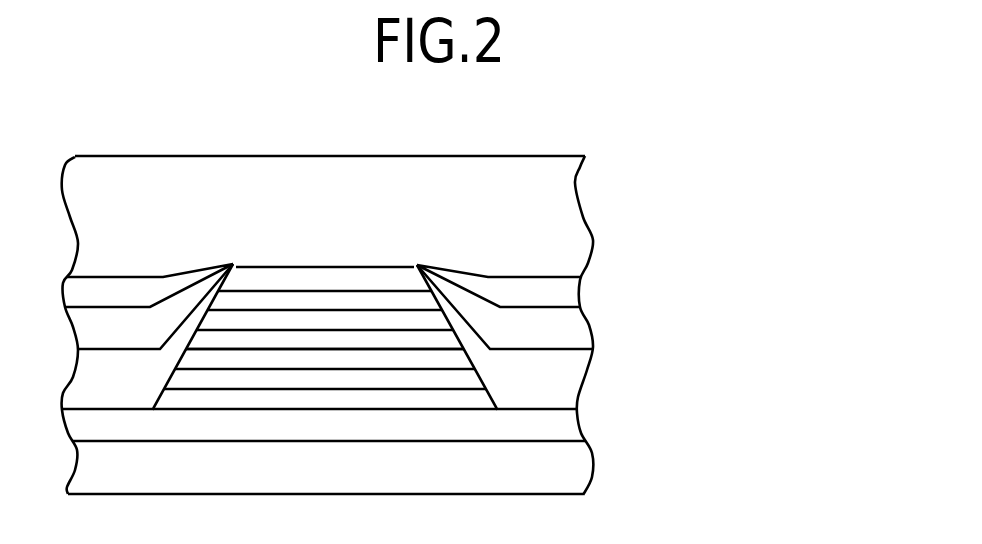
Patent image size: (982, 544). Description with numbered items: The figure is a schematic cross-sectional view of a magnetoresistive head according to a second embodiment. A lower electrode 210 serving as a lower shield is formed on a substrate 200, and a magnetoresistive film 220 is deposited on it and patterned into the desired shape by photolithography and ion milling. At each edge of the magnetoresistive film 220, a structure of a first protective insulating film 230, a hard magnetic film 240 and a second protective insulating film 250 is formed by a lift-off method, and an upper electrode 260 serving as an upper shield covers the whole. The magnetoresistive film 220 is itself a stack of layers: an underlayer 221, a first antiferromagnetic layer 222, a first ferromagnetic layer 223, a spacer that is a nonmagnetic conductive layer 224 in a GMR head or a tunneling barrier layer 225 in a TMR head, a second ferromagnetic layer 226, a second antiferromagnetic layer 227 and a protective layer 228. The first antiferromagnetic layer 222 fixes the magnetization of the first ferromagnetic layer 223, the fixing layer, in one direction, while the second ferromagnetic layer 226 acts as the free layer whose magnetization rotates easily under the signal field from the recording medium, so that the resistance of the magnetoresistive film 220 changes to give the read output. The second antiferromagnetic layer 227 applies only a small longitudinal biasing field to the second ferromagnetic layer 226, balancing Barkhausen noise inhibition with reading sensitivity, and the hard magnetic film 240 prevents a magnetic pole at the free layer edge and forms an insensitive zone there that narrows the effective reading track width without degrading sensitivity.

The substrate 200 is at (325, 473).
The lower electrode 210 is at (328, 425).
The magnetoresistive film 220 is at (810, 195).
The underlayer 221 is at (478, 397).
The first antiferromagnetic layer 222 is at (468, 380).
The first ferromagnetic layer 223 is at (453, 358).
The nonmagnetic conductive layer 224 is at (442, 342).
The tunneling barrier layer 225 is at (497, 334).
The second ferromagnetic layer 226 is at (430, 322).
The second antiferromagnetic layer 227 is at (417, 302).
The protective layer 228 is at (403, 283).
The first protective insulating film 230 is at (319, 336).
The hard magnetic film 240 is at (335, 306).
The second protective insulating film 250 is at (323, 286).
The upper electrode 260 is at (327, 325).